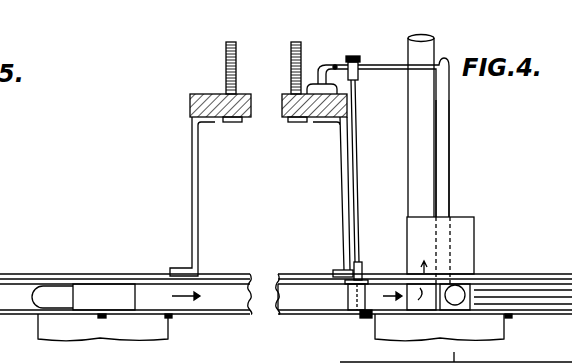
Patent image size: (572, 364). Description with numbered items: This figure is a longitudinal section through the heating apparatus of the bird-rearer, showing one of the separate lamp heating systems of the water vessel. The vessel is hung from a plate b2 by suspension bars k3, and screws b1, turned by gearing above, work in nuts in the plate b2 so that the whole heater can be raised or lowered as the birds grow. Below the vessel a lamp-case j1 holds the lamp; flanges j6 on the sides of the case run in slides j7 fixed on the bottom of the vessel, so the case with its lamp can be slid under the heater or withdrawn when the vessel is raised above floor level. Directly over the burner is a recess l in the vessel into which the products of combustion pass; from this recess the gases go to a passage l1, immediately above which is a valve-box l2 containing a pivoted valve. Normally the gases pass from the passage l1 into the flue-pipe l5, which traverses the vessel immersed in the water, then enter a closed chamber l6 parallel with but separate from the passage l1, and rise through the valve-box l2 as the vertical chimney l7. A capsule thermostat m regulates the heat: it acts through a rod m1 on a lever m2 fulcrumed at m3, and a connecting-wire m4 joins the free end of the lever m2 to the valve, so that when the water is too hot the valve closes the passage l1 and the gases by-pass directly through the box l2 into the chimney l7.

The screws b1 is at (237, 50).
The plate b2 is at (285, 102).
The bracket frame k3 is at (341, 188).
The thermostat m is at (342, 277).
The rod m1 is at (357, 168).
The lever m2 is at (396, 64).
The fulcrum m3 is at (335, 65).
The connecting-wire m4 is at (449, 125).
The chamber or recess l is at (93, 298).
The passage l1 is at (463, 302).
The valve-box l2 is at (460, 236).
The flue-pipe l5 is at (60, 295).
The closed chamber l6 is at (427, 296).
The chimney l7 is at (420, 100).
The lamp-case j1 is at (271, 327).
The flanges j6 is at (368, 310).
The slides j7 is at (170, 314).